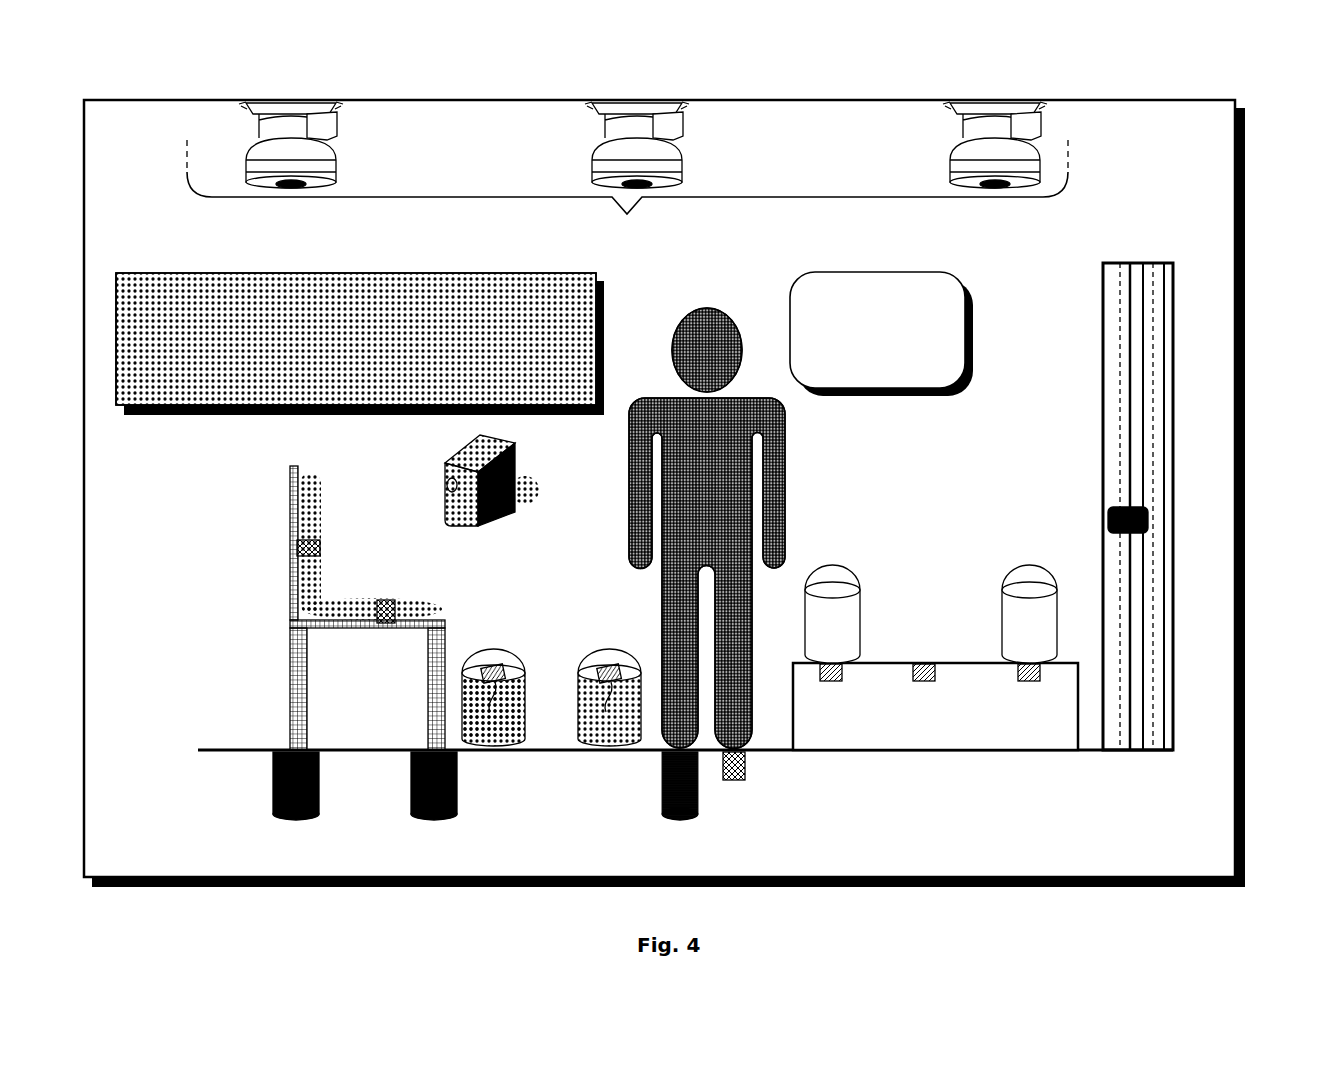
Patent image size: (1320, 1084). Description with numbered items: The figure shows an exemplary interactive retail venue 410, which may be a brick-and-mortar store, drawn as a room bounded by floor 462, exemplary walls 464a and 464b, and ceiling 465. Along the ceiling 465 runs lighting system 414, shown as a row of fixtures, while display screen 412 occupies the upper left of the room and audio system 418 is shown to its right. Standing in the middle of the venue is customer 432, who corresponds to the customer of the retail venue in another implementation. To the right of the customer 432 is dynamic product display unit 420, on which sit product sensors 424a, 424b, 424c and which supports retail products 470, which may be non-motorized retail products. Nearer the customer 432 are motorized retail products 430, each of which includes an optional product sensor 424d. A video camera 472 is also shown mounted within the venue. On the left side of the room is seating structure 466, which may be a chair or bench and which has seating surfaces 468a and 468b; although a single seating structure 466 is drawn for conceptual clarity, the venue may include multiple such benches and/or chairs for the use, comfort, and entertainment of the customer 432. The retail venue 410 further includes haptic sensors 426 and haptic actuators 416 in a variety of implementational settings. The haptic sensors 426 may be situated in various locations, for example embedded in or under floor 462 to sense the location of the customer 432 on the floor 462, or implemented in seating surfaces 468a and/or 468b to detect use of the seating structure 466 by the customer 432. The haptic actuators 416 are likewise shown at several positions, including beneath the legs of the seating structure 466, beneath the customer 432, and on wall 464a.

The interactive retail venue 410 is at (1252, 118).
The display screen 412 is at (360, 344).
The lighting system 414 is at (627, 176).
The haptic actuators 416 is at (273, 790).
The audio system 418 is at (881, 334).
The dynamic product display unit 420 is at (935, 706).
The product sensor 424a is at (840, 682).
The product sensor 424b is at (933, 682).
The product sensor 424c is at (1038, 682).
The optional product sensor 424d is at (551, 697).
The haptic sensors 426 is at (320, 547).
The motorized retail products 430 is at (527, 675).
The customer 432 is at (786, 437).
The floor 462 is at (256, 748).
The wall 464a is at (1103, 350).
The wall 464b is at (147, 500).
The ceiling 465 is at (773, 102).
The seating structure 466 is at (357, 608).
The seating surface 468a is at (320, 488).
The seating surface 468b is at (442, 606).
The retail products 470 is at (860, 578).
The video camera 472 is at (515, 452).